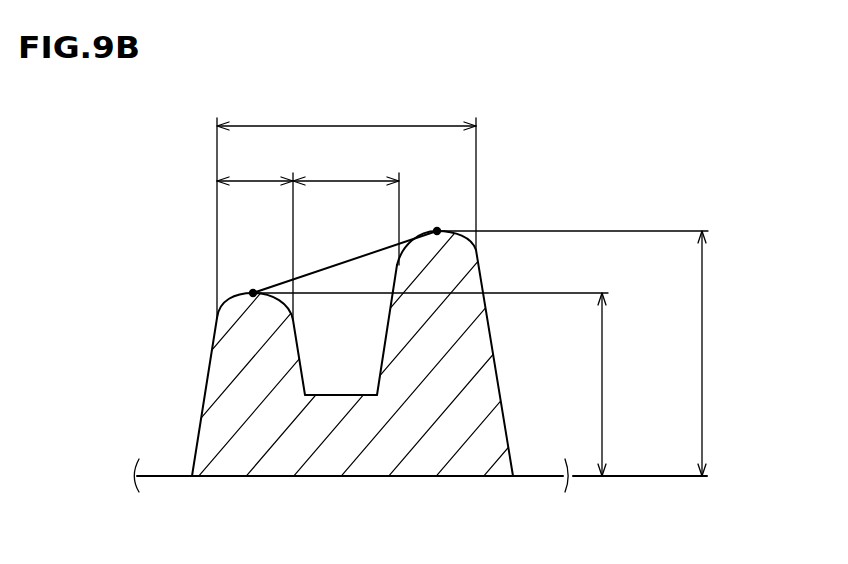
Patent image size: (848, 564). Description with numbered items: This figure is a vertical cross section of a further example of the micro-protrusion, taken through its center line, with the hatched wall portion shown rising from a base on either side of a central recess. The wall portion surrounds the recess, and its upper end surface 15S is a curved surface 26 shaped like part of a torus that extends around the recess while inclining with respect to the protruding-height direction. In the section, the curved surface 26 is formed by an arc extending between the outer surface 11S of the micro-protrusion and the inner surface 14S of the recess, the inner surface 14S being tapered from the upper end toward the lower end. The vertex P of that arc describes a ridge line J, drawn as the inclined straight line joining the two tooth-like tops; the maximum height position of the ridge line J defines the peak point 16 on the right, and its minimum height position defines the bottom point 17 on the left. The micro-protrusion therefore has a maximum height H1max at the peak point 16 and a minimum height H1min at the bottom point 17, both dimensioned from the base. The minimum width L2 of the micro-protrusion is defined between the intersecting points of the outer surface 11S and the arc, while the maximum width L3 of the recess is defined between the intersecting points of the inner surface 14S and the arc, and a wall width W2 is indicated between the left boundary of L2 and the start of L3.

The outer surface 11S is at (203, 387).
The inner surface 14S is at (298, 348).
The upper end surface 15S is at (458, 237).
The peak point 16 is at (438, 229).
The bottom point 17 is at (253, 293).
The curved surface 26 is at (476, 230).
The ridge line J is at (330, 262).
The minimum width L2 is at (346, 208).
The width W2 is at (255, 236).
The maximum width L3 is at (346, 209).
The maximum height H1max is at (617, 353).
The minimum height H1min is at (470, 384).